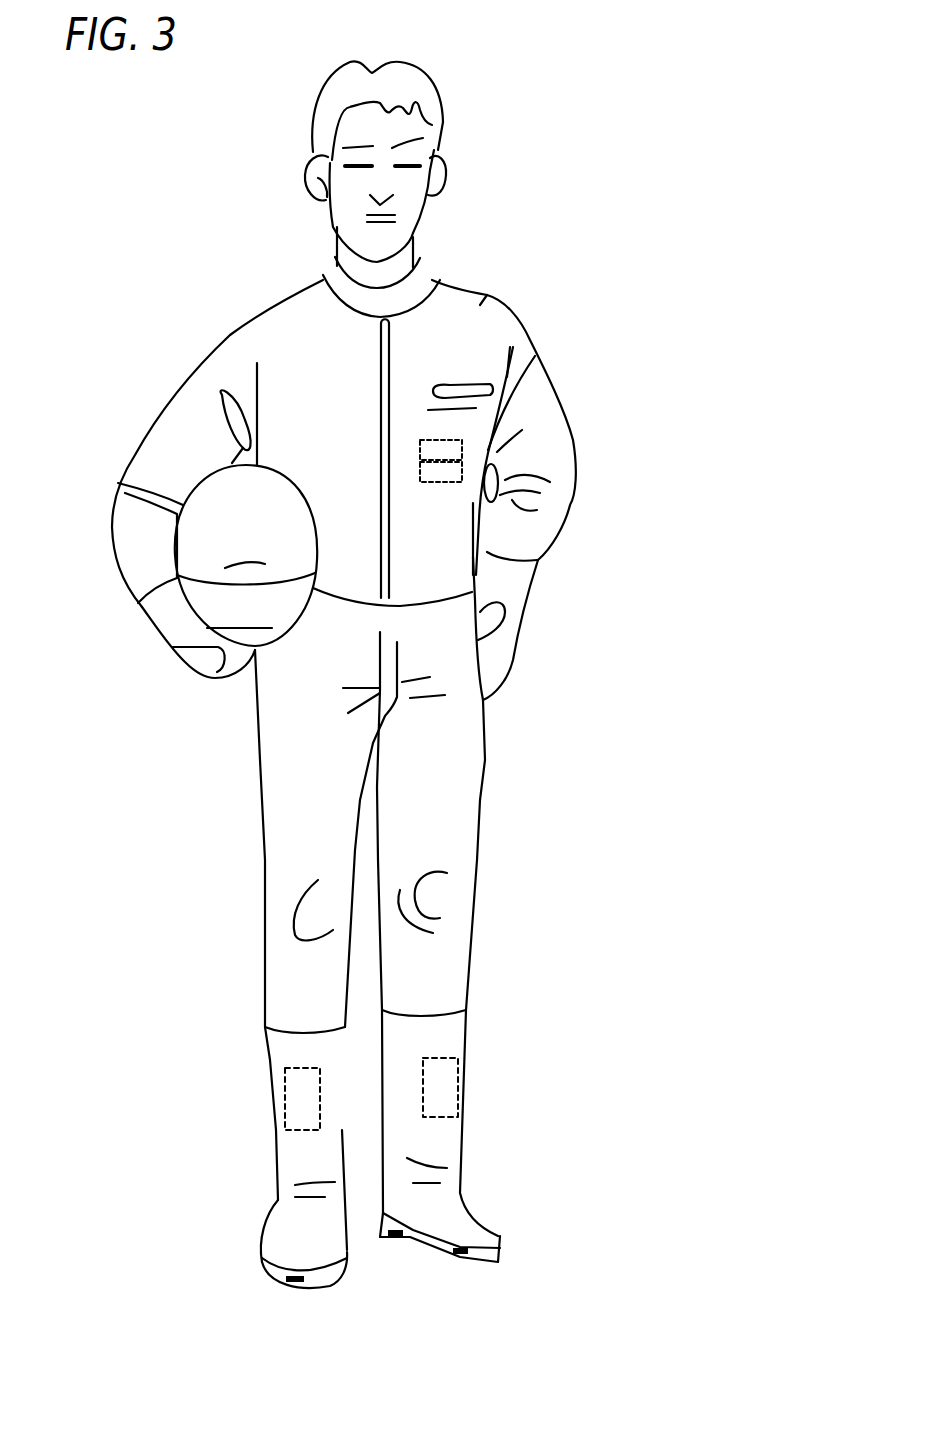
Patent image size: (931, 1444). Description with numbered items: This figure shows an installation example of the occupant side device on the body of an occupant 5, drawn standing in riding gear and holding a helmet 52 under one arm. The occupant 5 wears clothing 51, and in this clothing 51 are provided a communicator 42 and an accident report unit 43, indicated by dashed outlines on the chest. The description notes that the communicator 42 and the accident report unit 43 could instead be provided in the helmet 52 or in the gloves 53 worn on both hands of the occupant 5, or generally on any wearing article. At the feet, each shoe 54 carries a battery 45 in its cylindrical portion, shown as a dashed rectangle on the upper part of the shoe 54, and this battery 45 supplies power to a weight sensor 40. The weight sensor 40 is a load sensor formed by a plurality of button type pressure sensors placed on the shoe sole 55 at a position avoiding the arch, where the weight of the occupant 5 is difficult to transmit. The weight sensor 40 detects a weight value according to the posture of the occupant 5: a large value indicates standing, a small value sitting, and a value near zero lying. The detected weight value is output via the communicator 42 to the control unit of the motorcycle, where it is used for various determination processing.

The occupant 5 is at (510, 107).
The clothing 51 is at (485, 296).
The helmet 52 is at (190, 527).
The gloves 53 is at (153, 636).
The shoe 54 is at (270, 1073).
The shoe sole 55 is at (265, 1262).
The weight sensor 40 is at (295, 1290).
The communicator 42 is at (462, 445).
The accident report unit 43 is at (462, 472).
The battery 45 is at (268, 1108).